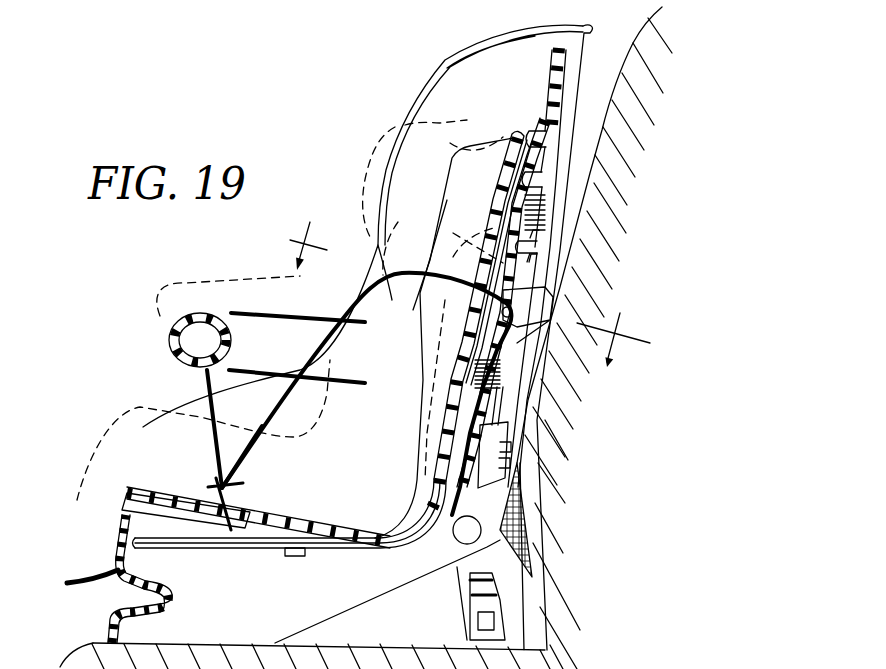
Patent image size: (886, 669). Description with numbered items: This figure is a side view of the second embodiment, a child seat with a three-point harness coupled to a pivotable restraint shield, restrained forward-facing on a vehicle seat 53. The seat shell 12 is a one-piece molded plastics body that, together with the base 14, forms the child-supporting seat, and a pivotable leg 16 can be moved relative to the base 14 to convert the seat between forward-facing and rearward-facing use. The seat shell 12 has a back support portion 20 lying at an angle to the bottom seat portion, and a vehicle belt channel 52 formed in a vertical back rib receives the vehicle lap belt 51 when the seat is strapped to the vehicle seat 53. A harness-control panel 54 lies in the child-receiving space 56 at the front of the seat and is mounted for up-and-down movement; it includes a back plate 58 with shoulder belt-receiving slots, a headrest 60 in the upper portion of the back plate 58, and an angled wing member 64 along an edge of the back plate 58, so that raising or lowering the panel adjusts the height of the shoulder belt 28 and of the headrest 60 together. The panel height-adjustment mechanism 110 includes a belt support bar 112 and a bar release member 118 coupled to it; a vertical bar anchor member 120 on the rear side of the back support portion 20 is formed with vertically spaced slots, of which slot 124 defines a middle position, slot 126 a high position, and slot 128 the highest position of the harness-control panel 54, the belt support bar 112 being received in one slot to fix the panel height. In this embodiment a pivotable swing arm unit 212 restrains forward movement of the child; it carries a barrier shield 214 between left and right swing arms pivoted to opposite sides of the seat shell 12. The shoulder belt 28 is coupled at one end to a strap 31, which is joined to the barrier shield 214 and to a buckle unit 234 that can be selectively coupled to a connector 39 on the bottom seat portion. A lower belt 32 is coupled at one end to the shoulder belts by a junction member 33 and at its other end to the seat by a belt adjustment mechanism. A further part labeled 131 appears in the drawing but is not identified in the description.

The seat shell 12 is at (600, 30).
The base 14 is at (97, 624).
The pivotable leg 16 is at (450, 619).
The back support portion 20 is at (478, 280).
The shoulder belt 28 is at (350, 310).
The strap 31 is at (214, 447).
The lower belt 32 is at (90, 583).
The junction member 33 is at (104, 517).
The connector 39 is at (190, 490).
The vehicle lap belt 51 is at (530, 455).
The vehicle belt channel 52 is at (498, 424).
The vehicle seat 53 is at (207, 652).
The harness-control panel 54 is at (509, 128).
The child-receiving space 56 is at (448, 85).
The back plate 58 is at (455, 400).
The headrest 60 is at (507, 153).
The second wing member 64 is at (470, 210).
The panel height-adjustment mechanism 110 is at (572, 156).
The belt support bar 112 is at (553, 340).
The bar release member 118 is at (537, 295).
The vertical bar anchor member 120 is at (565, 221).
The slot 124 is at (577, 250).
The slot 126 is at (578, 183).
The slot 128 is at (573, 162).
The notch 131 is at (575, 244).
The pivotable swing arm unit 212 is at (133, 308).
The barrier shield 214 is at (156, 346).
The buckle unit 234 is at (243, 493).